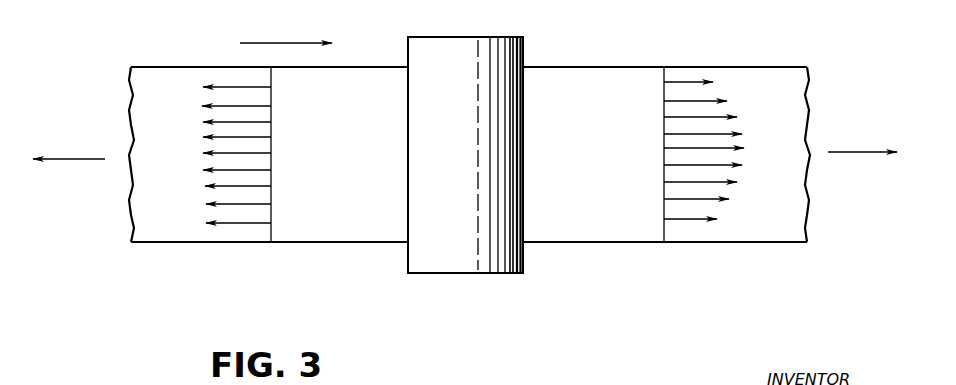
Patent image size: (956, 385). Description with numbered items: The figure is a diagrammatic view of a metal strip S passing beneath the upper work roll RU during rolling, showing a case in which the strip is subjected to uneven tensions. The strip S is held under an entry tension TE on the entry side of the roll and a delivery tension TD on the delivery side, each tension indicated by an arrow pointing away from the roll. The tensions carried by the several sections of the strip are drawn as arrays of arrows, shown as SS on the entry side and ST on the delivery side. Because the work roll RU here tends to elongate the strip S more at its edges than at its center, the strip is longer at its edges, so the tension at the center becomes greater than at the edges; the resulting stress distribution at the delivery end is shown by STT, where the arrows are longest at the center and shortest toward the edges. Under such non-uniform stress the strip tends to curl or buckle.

The upper work roll RU is at (508, 37).
The strip S is at (603, 74).
The entry-side section tensions SS is at (236, 146).
The delivery-side section tensions ST is at (703, 100).
The uneven delivery-end stress distribution STT is at (704, 177).
The entry tension TE is at (69, 175).
The delivery tension TD is at (862, 168).